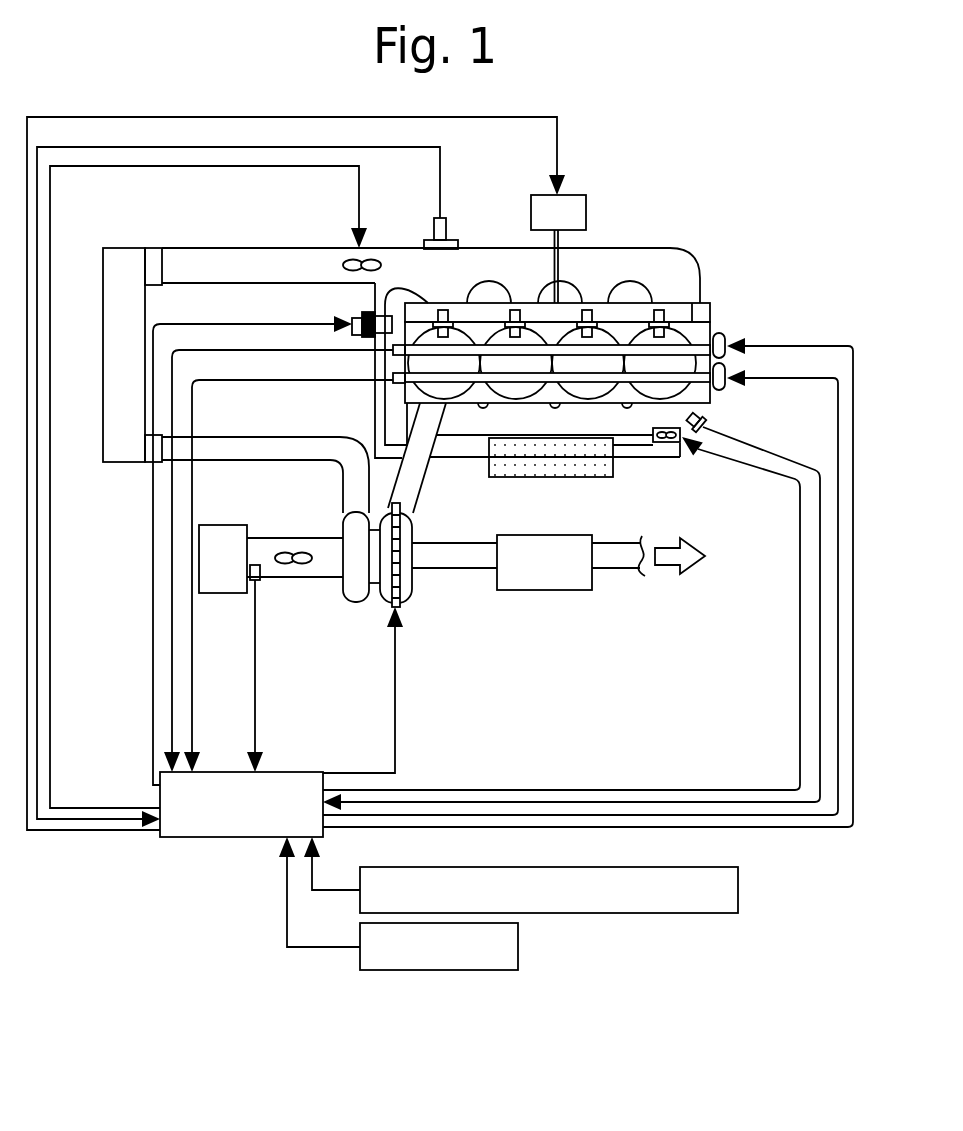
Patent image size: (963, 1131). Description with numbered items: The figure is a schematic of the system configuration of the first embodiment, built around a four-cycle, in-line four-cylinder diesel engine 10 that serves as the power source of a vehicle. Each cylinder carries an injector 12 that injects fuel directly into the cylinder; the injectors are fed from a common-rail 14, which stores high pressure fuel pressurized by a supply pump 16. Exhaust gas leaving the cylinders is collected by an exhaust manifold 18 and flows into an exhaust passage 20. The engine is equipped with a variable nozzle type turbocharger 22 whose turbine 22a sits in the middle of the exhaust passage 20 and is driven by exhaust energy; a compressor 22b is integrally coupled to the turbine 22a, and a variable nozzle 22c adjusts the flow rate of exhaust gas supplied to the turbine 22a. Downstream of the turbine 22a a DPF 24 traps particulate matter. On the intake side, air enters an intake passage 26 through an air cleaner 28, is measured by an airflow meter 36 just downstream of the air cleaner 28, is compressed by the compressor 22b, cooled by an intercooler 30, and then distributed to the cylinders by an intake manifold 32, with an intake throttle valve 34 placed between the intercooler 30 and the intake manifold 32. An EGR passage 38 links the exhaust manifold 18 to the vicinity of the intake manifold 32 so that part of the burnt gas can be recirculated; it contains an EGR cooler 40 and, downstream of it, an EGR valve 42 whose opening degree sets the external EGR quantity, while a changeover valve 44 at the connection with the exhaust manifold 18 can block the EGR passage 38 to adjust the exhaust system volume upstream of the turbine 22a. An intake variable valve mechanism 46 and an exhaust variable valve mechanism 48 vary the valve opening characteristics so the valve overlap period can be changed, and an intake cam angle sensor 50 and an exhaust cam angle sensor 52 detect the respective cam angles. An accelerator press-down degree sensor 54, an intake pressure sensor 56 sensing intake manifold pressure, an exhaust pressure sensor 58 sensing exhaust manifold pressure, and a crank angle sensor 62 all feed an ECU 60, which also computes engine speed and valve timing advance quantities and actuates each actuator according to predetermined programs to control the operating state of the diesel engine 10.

The diesel engine 10 is at (576, 293).
The injector 12 is at (676, 330).
The common-rail 14 is at (685, 312).
The supply pump 16 is at (568, 195).
The exhaust manifold 18 is at (623, 422).
The exhaust passage 20 is at (422, 548).
The variable nozzle type turbocharger 22 is at (352, 598).
The turbine 22a is at (407, 605).
The compressor 22b is at (345, 600).
The variable nozzle 22c is at (390, 608).
The DPF 24 is at (580, 590).
The intake passage 26 is at (198, 255).
The air cleaner 28 is at (230, 593).
The intercooler 30 is at (120, 348).
The intake manifold 32 is at (668, 265).
The intake throttle valve 34 is at (348, 262).
The airflow meter 36 is at (258, 565).
The EGR passage 38 is at (380, 415).
The EGR cooler 40 is at (577, 478).
The EGR valve 42 is at (353, 320).
The changeover valve 44 is at (678, 445).
The intake variable valve mechanism 46 is at (728, 338).
The exhaust variable valve mechanism 48 is at (728, 388).
The intake cam angle sensor 50 is at (393, 350).
The exhaust cam angle sensor 52 is at (393, 380).
The accelerator press-down degree sensor 54 is at (740, 895).
The intake pressure sensor 56 is at (452, 222).
The exhaust pressure sensor 58 is at (705, 427).
The ECU 60 is at (290, 772).
The crank angle sensor 62 is at (518, 945).